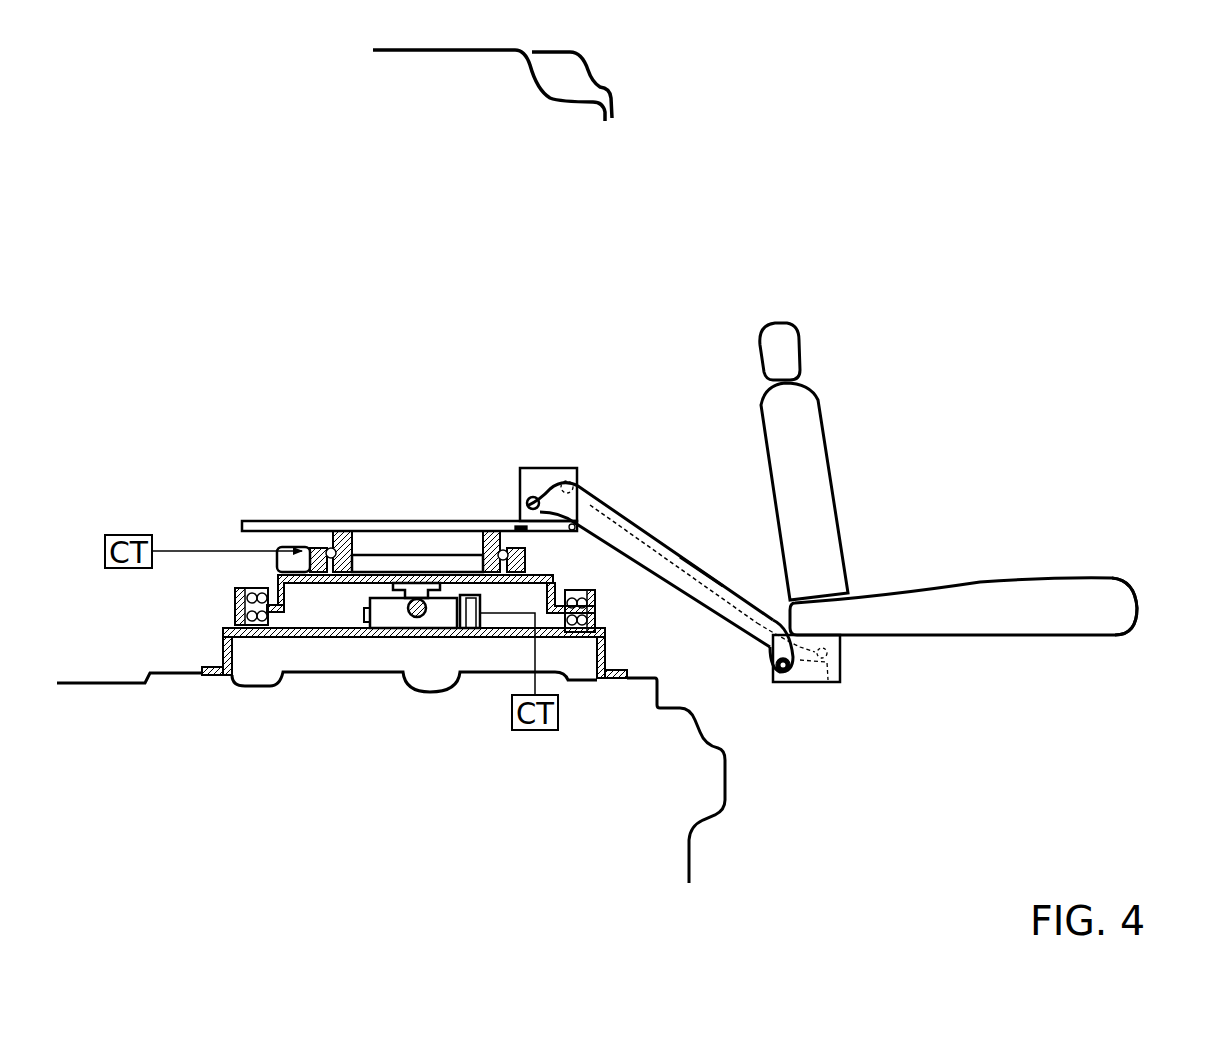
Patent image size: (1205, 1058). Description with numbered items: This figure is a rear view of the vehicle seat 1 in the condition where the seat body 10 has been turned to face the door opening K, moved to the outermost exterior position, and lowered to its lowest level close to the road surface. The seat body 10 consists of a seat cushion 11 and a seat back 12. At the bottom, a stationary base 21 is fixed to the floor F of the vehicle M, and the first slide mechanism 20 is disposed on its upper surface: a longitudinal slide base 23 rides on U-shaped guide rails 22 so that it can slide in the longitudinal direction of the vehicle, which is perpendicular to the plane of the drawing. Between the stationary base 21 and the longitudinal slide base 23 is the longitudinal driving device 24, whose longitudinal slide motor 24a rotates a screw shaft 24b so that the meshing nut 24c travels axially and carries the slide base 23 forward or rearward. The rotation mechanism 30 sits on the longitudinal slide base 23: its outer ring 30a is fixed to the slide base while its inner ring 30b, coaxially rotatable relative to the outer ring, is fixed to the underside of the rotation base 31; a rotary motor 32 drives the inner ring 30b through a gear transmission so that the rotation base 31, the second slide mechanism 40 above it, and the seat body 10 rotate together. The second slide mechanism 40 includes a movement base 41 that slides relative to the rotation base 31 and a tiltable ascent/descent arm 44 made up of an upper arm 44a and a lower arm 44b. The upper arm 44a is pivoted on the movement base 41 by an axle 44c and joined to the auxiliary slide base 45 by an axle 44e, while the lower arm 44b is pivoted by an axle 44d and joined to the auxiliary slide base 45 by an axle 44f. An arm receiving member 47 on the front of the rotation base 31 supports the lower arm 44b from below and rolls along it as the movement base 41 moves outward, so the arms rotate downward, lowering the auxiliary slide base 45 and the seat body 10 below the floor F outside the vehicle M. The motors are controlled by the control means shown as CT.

The vehicle seat 1 is at (500, 417).
The seat body 10 is at (990, 578).
The seat cushion 11 is at (1130, 587).
The seat back 12 is at (822, 428).
The first slide mechanism 20 is at (338, 666).
The stationary base 21 is at (225, 637).
The guide rails 22 is at (235, 607).
The longitudinal slide base 23 is at (272, 628).
The longitudinal driving device 24 is at (423, 701).
The longitudinal slide motor 24a is at (383, 613).
The screw shaft 24b is at (420, 627).
The nut 24c is at (432, 598).
The rotation mechanism 30 is at (283, 542).
The outer ring 30a is at (318, 583).
The inner ring 30b is at (338, 583).
The rotation base 31 is at (343, 518).
The rotary motor 32 is at (280, 562).
The second slide mechanism 40 is at (832, 720).
The movement base 41 is at (527, 467).
The ascent/descent arm 44 is at (610, 518).
The upper arm 44a is at (723, 582).
The lower arm 44b is at (680, 580).
The axle 44c is at (567, 481).
The axle 44d is at (527, 495).
The axle 44e is at (828, 680).
The axle 44f is at (770, 670).
The auxiliary slide base 45 is at (803, 683).
The arm receiving member 47 is at (585, 510).
The floor F is at (112, 681).
The door opening K is at (605, 233).
The vehicle M is at (715, 822).